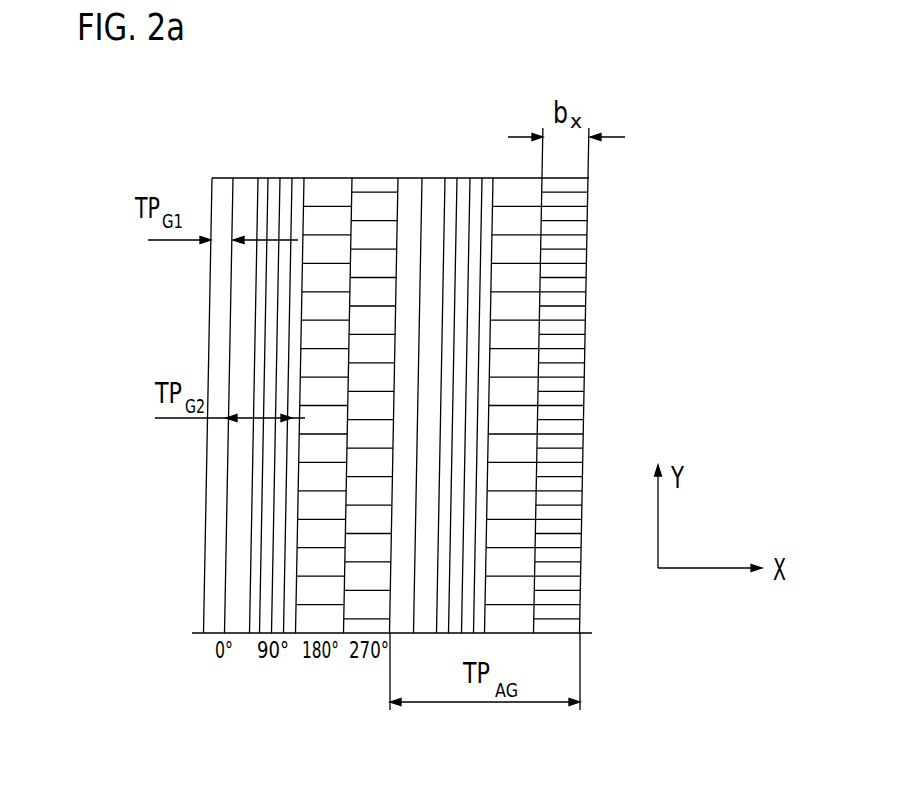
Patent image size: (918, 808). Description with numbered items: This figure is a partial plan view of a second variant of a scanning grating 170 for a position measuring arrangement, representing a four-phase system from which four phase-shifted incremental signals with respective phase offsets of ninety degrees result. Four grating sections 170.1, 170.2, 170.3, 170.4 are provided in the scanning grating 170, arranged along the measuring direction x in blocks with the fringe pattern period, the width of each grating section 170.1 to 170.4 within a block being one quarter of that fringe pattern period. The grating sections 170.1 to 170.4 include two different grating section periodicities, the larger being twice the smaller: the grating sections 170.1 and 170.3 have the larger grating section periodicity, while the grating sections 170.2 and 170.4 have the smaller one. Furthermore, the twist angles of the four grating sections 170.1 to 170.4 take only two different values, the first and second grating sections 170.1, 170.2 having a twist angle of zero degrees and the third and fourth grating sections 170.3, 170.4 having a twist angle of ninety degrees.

The scanning grating 170 is at (602, 363).
The grating section 170.1 is at (235, 178).
The grating section 170.2 is at (285, 178).
The grating section 170.3 is at (347, 178).
The grating section 170.4 is at (392, 178).